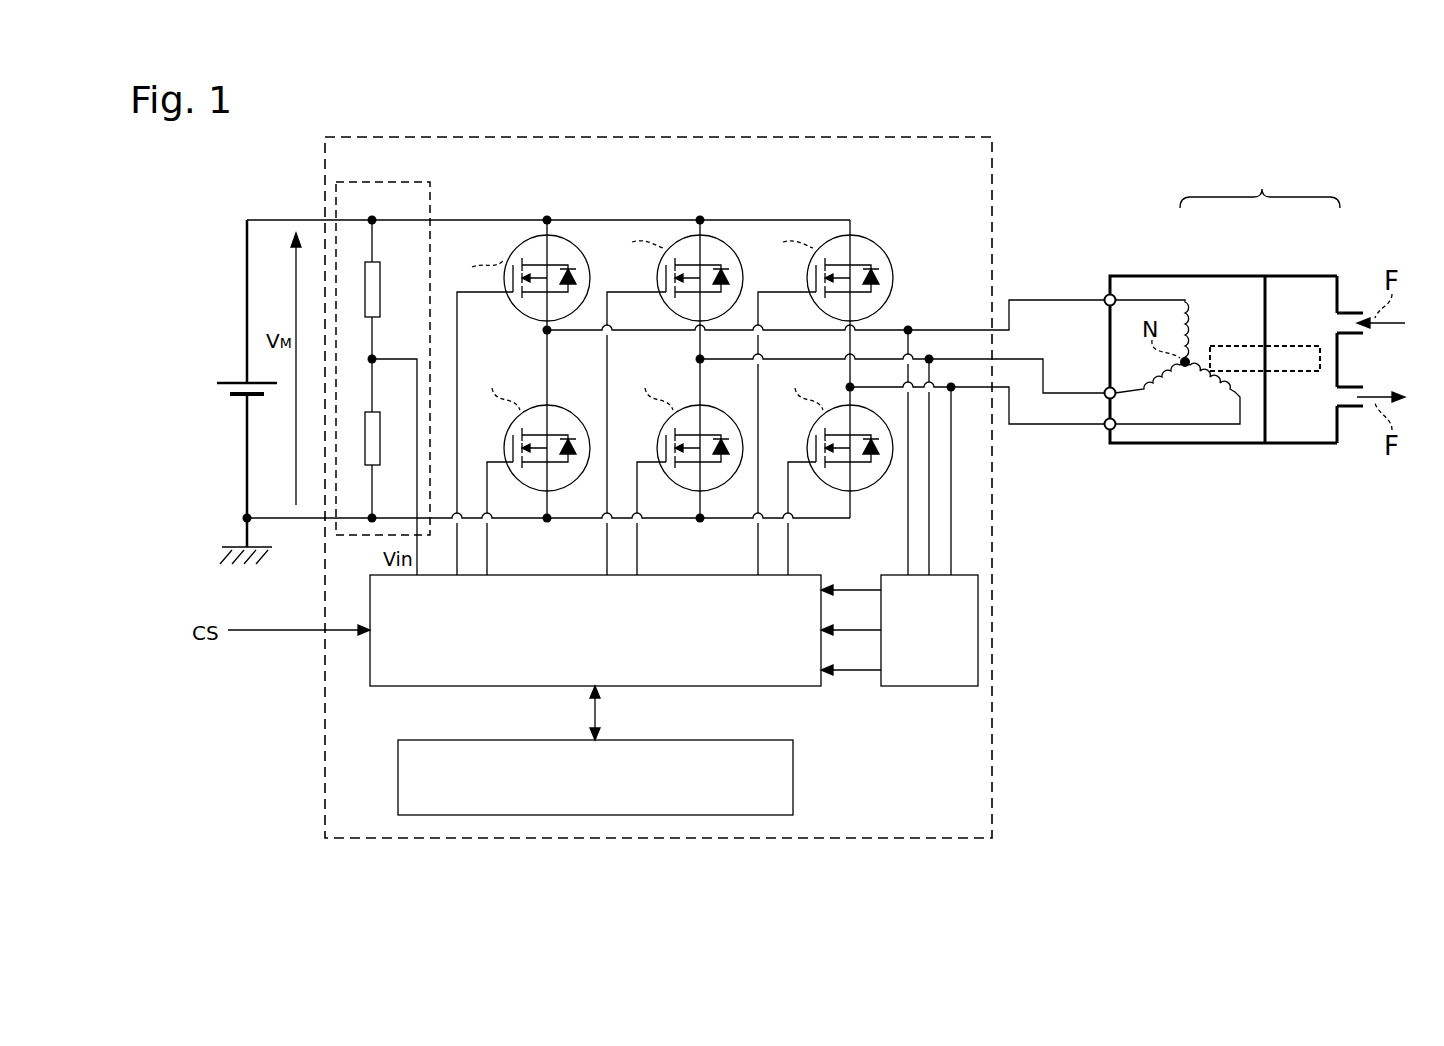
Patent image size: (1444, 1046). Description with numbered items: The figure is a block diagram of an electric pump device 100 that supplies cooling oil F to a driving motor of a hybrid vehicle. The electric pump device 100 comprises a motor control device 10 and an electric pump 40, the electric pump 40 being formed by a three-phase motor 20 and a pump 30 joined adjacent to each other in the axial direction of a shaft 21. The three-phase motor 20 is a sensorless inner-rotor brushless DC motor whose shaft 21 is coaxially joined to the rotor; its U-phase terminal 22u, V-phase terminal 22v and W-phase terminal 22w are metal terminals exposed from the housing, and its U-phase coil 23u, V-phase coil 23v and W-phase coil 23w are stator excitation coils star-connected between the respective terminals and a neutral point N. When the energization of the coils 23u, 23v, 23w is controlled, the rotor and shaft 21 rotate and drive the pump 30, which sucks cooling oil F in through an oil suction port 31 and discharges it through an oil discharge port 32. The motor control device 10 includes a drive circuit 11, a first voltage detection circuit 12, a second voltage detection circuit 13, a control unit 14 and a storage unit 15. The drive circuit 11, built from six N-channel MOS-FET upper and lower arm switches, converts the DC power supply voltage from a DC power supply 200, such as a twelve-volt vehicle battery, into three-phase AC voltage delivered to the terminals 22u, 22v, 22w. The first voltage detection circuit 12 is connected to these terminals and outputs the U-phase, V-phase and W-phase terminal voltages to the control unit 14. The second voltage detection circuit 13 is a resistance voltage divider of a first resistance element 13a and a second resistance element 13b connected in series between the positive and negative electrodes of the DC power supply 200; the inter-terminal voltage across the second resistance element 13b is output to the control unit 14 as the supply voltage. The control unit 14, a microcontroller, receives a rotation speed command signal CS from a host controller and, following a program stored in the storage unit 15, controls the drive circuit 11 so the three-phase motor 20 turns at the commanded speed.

The motor control device 10 is at (992, 783).
The drive circuit 11 is at (858, 217).
The first voltage detection circuit 12 is at (978, 624).
The second voltage detection circuit 13 is at (378, 180).
The first resistance element 13a is at (380, 290).
The second resistance element 13b is at (380, 438).
The control unit 14 is at (375, 686).
The storage unit 15 is at (793, 778).
The three-phase motor 20 is at (1190, 276).
The shaft 21 is at (1297, 371).
The U-phase terminal 22u is at (1104, 296).
The V-phase terminal 22v is at (1104, 389).
The W-phase terminal 22w is at (1104, 429).
The U-phase coil 23u is at (1190, 326).
The V-phase coil 23v is at (1152, 393).
The W-phase coil 23w is at (1215, 397).
The pump 30 is at (1313, 276).
The oil suction port 31 is at (1347, 313).
The oil discharge port 32 is at (1350, 406).
The electric pump 40 is at (1260, 180).
The electric pump device 100 is at (1195, 623).
The DC power supply 200 is at (240, 380).